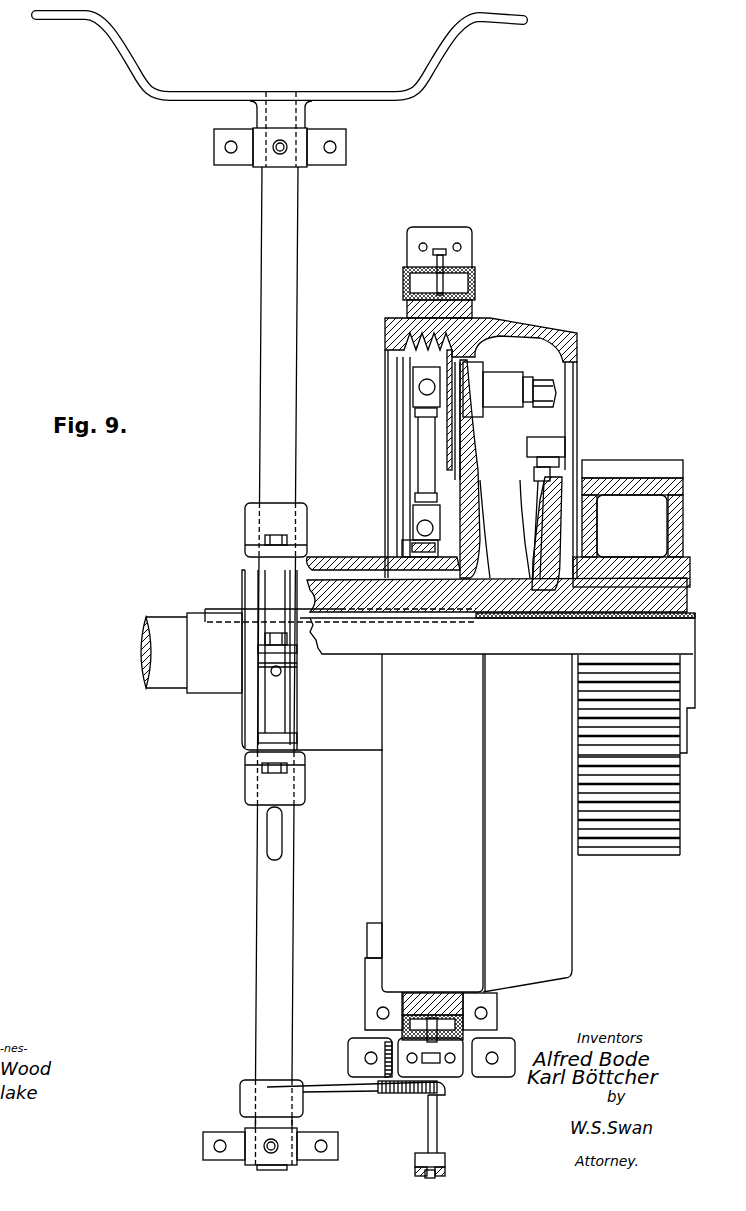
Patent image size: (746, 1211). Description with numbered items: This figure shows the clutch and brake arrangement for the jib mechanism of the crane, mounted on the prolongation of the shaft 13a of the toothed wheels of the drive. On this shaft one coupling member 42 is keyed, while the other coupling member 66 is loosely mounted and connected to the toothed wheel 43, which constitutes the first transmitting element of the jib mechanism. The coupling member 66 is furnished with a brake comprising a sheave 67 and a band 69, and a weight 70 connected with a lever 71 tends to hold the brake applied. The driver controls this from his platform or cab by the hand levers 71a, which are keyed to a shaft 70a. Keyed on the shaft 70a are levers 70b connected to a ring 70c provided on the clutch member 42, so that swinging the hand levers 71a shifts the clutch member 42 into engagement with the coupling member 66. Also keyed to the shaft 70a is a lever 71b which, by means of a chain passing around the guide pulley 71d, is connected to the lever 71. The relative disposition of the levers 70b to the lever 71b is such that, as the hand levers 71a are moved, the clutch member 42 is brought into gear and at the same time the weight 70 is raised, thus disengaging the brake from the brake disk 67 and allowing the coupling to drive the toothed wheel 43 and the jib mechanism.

The hand levers 71a is at (370, 95).
The shaft 70a is at (262, 312).
The levers 70b is at (206, 803).
The coupling member 42 is at (352, 557).
The shaft 13a is at (165, 643).
The ring 70c is at (272, 708).
The band 69 is at (472, 270).
The sheave 67 is at (473, 317).
The coupling member 66 is at (540, 330).
The toothed wheel 43 is at (622, 460).
The lever 71b is at (328, 1088).
The guide pulley 71d is at (410, 1093).
The lever 71 is at (433, 1115).
The weight 70 is at (447, 1160).